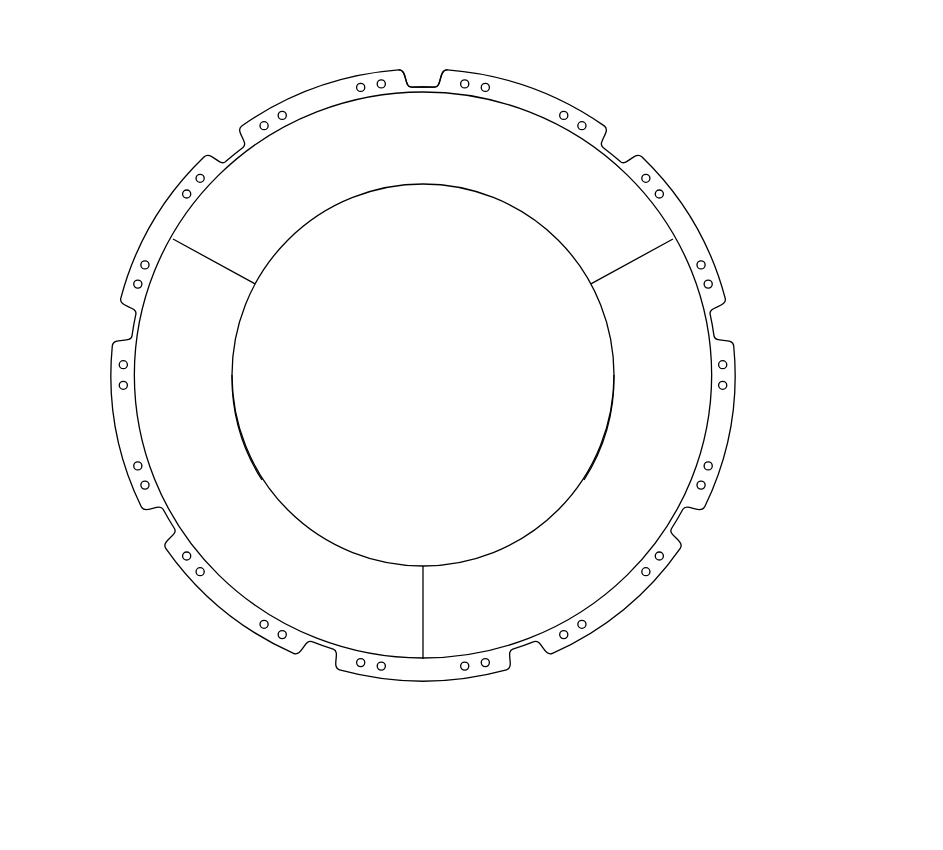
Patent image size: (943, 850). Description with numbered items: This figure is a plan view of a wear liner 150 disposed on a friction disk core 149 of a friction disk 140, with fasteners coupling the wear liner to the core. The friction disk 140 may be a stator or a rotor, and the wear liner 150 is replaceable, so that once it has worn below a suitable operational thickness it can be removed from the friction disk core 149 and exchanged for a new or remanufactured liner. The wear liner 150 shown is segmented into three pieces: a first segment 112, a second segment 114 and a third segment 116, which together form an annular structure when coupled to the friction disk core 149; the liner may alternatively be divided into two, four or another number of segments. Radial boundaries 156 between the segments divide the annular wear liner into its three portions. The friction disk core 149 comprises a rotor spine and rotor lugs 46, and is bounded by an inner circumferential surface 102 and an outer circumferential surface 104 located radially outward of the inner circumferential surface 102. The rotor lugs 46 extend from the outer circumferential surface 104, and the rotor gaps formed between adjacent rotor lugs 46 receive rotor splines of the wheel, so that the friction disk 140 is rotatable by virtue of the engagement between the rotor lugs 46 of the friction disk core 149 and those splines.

The friction disk 140 is at (146, 70).
The rotor lugs 46 is at (302, 93).
The second segment 114 is at (348, 118).
The outer circumferential surface 104 is at (410, 84).
The support struts 156 is at (275, 217).
The inner circumferential surface 102 is at (385, 185).
The wear liner 150 is at (226, 425).
The third segment 116 is at (630, 394).
The first segment 112 is at (152, 434).
The friction disk core 149 is at (710, 450).